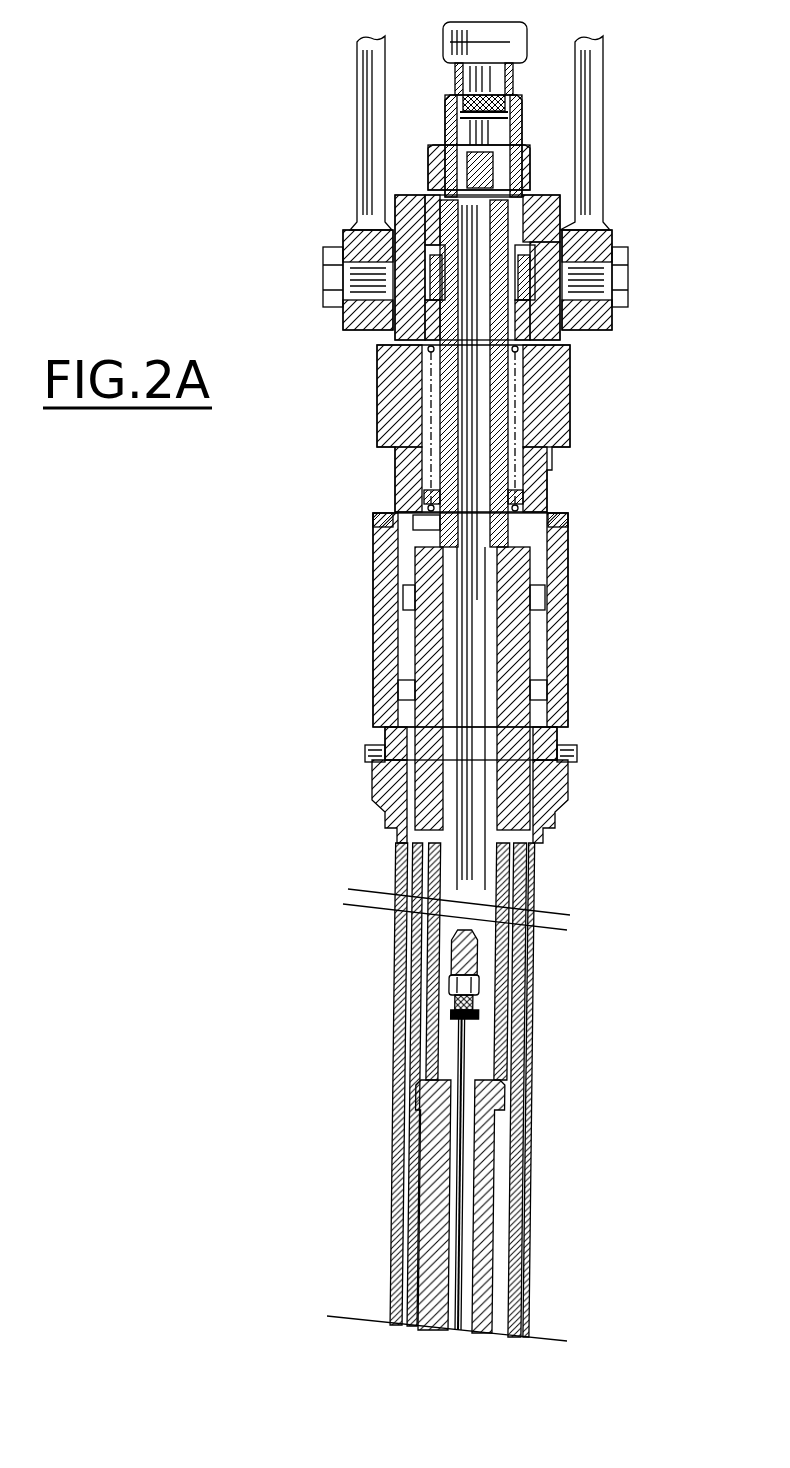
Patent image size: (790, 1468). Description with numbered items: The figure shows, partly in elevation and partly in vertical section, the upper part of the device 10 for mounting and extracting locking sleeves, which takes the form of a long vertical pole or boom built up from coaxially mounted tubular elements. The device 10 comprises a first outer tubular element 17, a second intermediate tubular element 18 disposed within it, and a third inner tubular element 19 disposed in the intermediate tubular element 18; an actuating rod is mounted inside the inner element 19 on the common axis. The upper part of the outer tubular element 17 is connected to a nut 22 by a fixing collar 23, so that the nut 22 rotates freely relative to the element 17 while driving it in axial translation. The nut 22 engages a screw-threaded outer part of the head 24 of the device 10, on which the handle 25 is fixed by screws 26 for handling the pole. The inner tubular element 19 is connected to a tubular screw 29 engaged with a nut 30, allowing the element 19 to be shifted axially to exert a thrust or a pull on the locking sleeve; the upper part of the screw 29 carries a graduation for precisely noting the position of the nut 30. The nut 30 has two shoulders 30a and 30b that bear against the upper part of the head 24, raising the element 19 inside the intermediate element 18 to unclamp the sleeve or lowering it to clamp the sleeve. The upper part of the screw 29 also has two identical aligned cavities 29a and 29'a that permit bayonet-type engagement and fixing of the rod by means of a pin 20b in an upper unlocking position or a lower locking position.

The device for mounting and extracting locking sleeves 10 is at (326, 563).
The first outer tubular element 17 is at (532, 1112).
The second intermediate tubular element 18 is at (508, 1313).
The third inner tubular element 19 is at (432, 1024).
The pin 20b is at (513, 110).
The nut 22 is at (548, 661).
The fixing collar 23 is at (560, 815).
The head 24 is at (548, 416).
The handle 25 is at (372, 180).
The screws 26 is at (362, 283).
The screw 29 is at (558, 545).
The cavity 29a is at (507, 80).
The cavity 29'a is at (392, 86).
The nut 30 is at (530, 150).
The shoulder 30a is at (517, 200).
The shoulder 30b is at (548, 210).